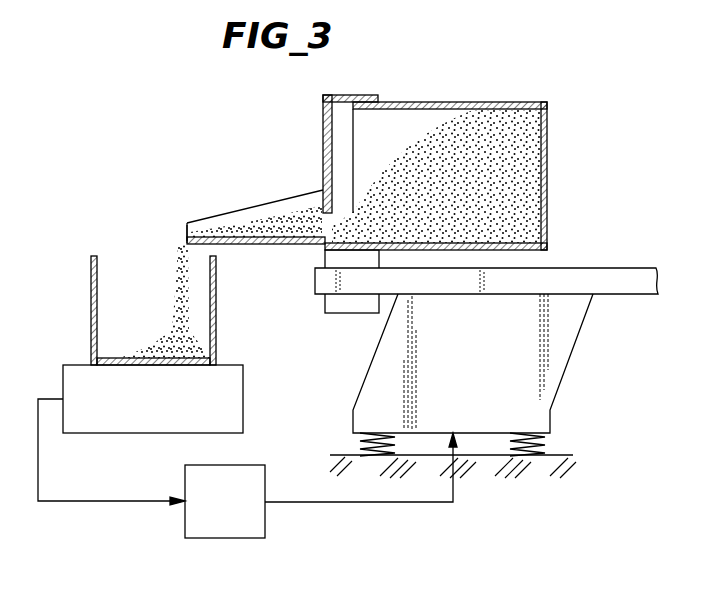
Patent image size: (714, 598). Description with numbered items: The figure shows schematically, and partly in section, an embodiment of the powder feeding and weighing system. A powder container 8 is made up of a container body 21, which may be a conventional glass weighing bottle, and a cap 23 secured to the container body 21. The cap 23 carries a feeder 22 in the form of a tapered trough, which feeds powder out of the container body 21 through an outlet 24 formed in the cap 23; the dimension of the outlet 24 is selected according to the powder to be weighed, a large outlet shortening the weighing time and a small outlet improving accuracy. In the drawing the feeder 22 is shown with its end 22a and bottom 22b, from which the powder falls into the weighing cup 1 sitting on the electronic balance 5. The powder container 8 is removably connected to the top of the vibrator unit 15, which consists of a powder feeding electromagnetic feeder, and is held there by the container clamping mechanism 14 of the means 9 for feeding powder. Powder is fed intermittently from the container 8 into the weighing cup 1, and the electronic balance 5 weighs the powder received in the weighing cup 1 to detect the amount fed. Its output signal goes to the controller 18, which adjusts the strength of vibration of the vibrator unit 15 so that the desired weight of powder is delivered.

The weighing cup 1 is at (91, 311).
The electronic balance 5 is at (63, 373).
The powder container 8 is at (456, 101).
The means for feeding powder 9 is at (598, 268).
The container clamping mechanism 14 is at (352, 314).
The vibrator unit 15 is at (575, 355).
The controller 18 is at (265, 472).
The container body 21 is at (547, 165).
The feeder 22 is at (219, 215).
The chute discharge end 22a is at (187, 233).
The chute bottom plate 22b is at (258, 246).
The cap 23 is at (325, 128).
The outlet 24 is at (317, 224).